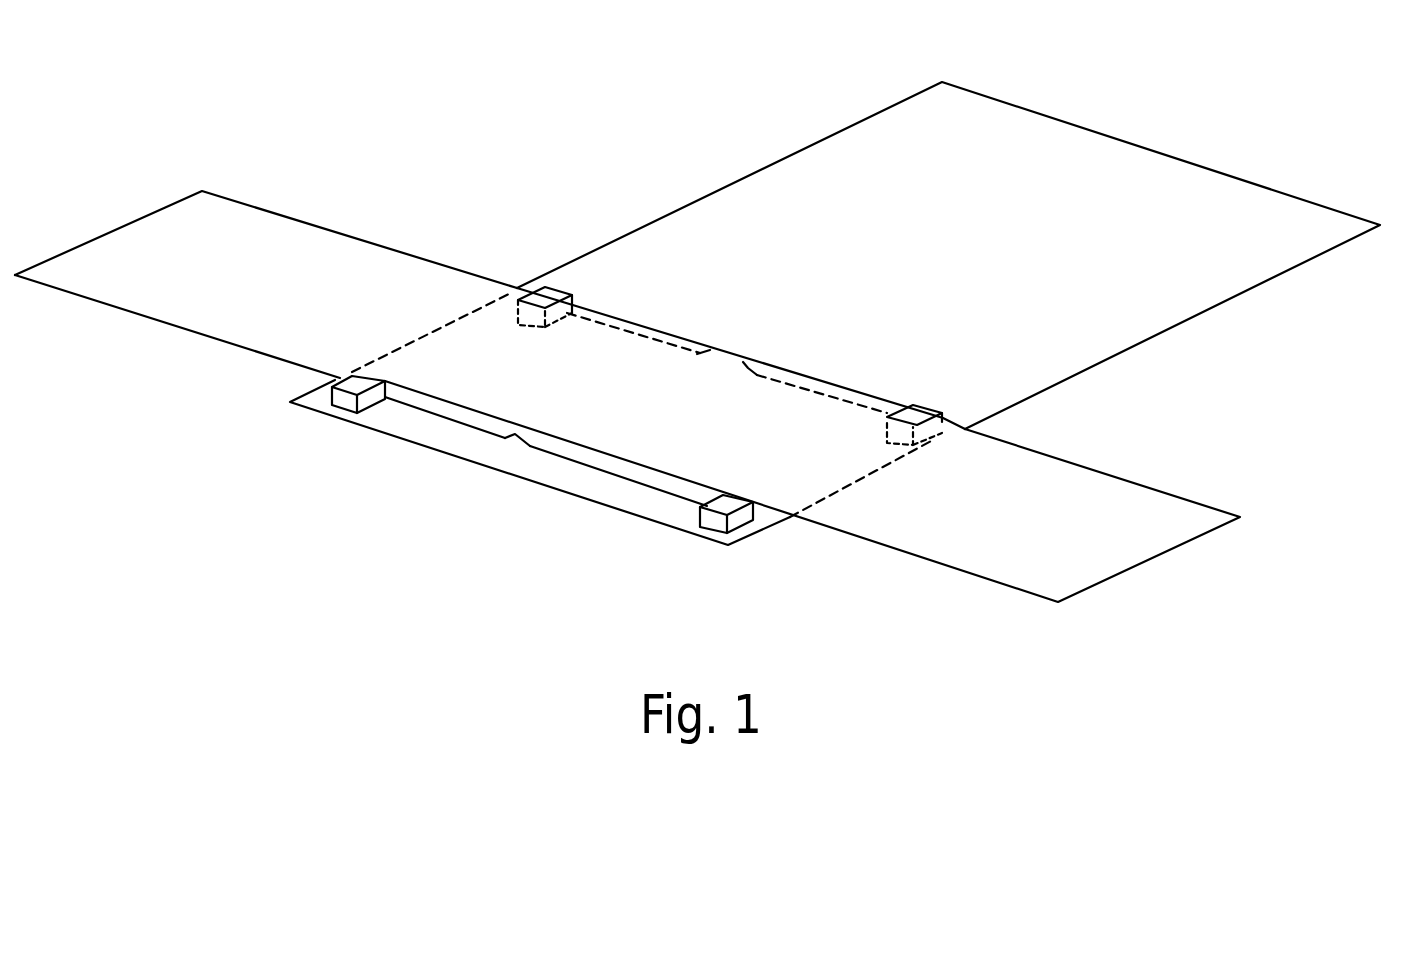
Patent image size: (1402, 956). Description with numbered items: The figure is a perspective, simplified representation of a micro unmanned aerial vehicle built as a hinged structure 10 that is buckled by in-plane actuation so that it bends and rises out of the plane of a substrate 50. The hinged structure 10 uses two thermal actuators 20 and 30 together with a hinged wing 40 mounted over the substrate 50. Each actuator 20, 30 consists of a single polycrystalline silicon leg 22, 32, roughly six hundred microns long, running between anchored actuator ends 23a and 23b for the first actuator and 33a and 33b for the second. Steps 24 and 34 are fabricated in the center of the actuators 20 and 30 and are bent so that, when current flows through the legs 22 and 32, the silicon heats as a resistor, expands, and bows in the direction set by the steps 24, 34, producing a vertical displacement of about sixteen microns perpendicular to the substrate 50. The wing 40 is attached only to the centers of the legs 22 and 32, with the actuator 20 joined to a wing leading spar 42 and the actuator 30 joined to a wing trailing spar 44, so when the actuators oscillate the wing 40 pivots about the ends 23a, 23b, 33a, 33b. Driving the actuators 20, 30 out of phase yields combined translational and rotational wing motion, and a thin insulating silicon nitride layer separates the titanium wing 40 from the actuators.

The hinged structure 10 is at (531, 60).
The thermal actuator 20 is at (440, 450).
The polycrystalline silicon leg 22 is at (547, 470).
The actuator end 23a is at (332, 403).
The actuator end 23b is at (740, 520).
The step 24 is at (460, 437).
The thermal actuator 30 is at (832, 390).
The polycrystalline silicon leg 32 is at (755, 375).
The actuator end 33a is at (533, 317).
The actuator end 33b is at (922, 430).
The step 34 is at (738, 360).
The hinged wing 40 is at (1090, 500).
The wing leading spar 42 is at (227, 340).
The wing trailing spar 44 is at (393, 250).
The substrate 50 is at (838, 132).